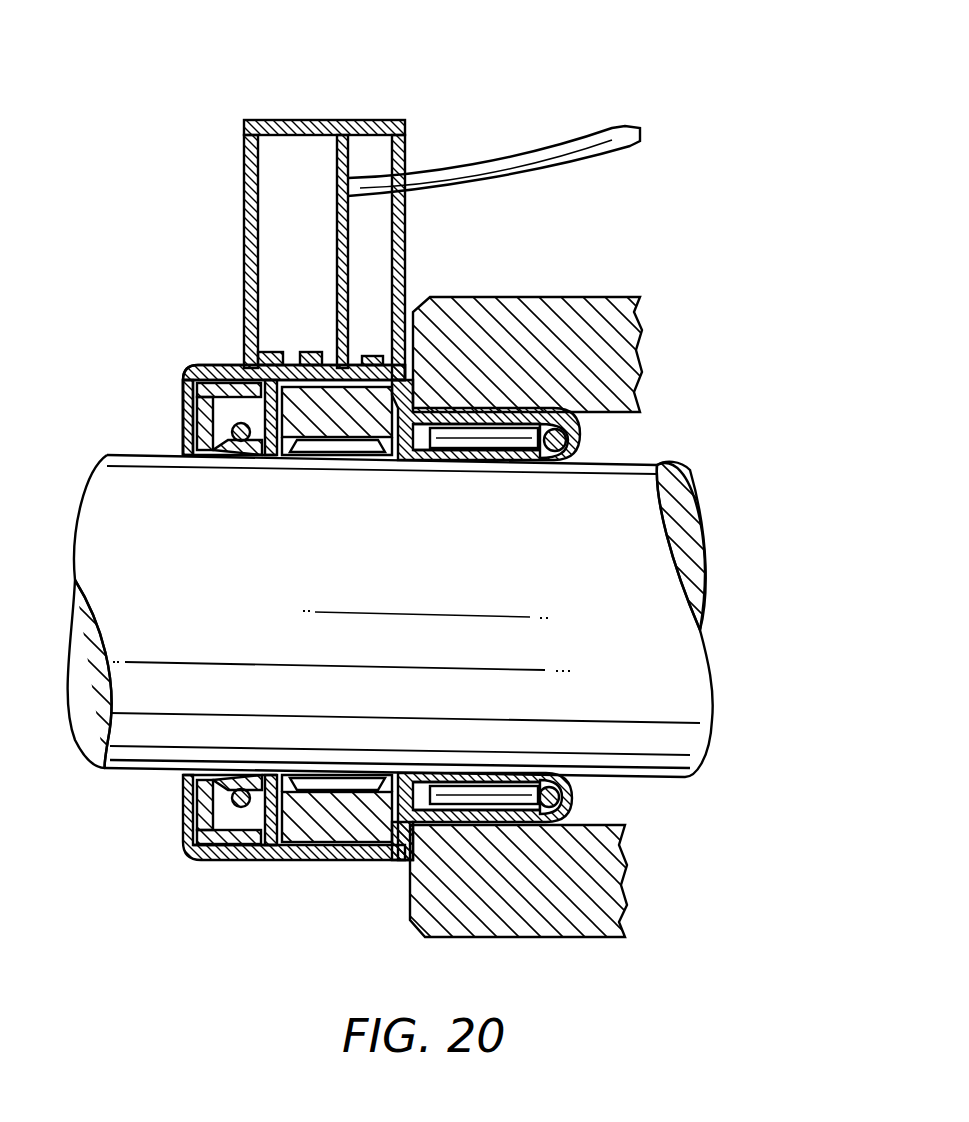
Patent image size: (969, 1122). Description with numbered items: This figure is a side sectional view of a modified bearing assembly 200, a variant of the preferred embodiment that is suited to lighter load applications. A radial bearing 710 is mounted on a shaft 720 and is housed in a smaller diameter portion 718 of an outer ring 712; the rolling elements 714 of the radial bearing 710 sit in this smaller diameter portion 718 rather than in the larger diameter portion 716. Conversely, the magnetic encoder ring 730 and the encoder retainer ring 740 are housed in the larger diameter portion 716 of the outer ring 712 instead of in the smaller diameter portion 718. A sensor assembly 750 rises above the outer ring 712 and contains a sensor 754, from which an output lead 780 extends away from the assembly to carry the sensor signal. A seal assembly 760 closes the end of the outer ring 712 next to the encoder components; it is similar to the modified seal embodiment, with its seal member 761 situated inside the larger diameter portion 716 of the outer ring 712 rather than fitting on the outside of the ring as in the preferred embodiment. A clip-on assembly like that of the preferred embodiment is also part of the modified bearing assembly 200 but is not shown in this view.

The modified bearing assembly 200 is at (213, 332).
The radial bearing 710 is at (565, 444).
The outer ring 712 is at (205, 868).
The rolling elements 714 is at (560, 804).
The larger diameter portion 716 is at (280, 852).
The smaller diameter portion 718 is at (480, 430).
The shaft 720 is at (414, 586).
The magnetic encoder ring 730 is at (338, 835).
The encoder retainer ring 740 is at (328, 778).
The sensor assembly 750 is at (337, 120).
The sensor 754 is at (330, 368).
The seal assembly 760 is at (193, 385).
The seal member 761 is at (192, 790).
The output lead 780 is at (608, 136).